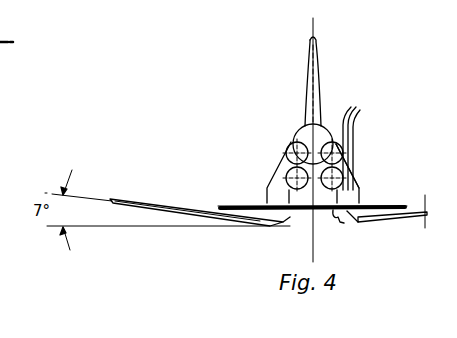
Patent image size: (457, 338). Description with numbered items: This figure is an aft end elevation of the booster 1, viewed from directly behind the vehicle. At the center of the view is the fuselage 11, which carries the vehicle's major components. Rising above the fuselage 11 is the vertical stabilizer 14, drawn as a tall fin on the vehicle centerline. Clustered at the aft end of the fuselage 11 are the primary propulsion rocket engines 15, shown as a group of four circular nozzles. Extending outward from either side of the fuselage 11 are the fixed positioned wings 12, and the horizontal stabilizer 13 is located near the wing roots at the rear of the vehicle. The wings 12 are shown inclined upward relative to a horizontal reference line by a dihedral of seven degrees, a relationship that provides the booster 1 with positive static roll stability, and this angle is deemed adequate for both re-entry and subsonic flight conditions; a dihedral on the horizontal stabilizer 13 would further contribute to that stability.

The booster 1 is at (268, 184).
The fuselage 11 is at (346, 188).
The fixed positioned wings 12 is at (386, 222).
The horizontal stabilizer 13 is at (342, 223).
The vertical stabilizer 14 is at (318, 78).
The primary propulsion rocket engines 15 is at (335, 132).